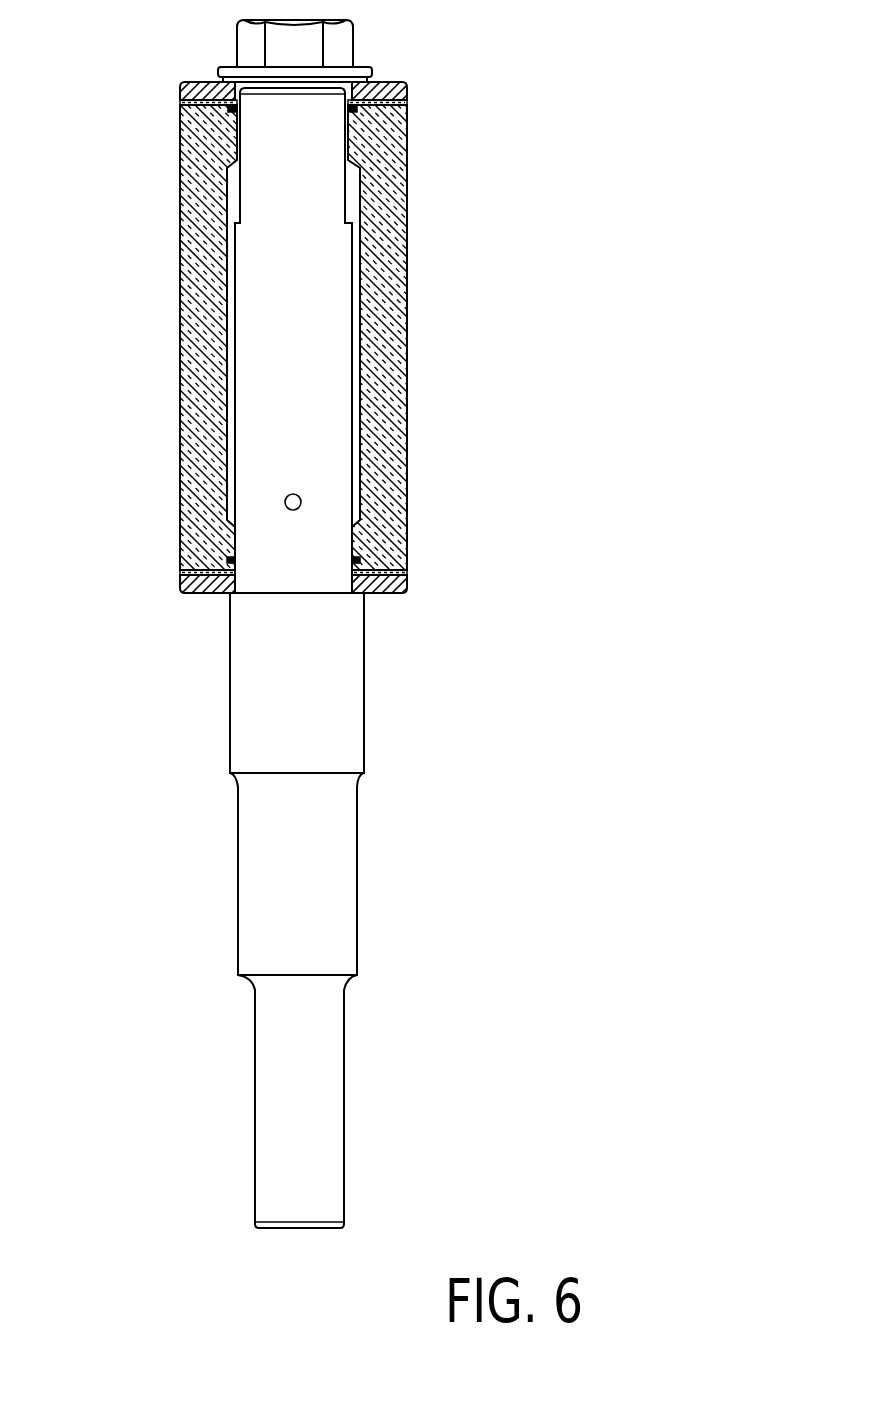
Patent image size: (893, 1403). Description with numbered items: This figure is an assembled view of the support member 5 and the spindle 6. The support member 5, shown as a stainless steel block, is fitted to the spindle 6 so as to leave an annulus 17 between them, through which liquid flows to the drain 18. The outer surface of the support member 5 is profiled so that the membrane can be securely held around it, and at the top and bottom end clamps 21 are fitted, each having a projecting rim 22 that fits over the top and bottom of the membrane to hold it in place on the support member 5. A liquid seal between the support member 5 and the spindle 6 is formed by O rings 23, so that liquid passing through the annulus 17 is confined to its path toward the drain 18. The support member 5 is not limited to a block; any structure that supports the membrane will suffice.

The support member 5 is at (405, 312).
The spindle 6 is at (322, 683).
The annulus 17 is at (403, 198).
The drain 18 is at (293, 494).
The end clamps 21 is at (405, 83).
The projecting rim 22 is at (403, 104).
The O rings 23 is at (230, 106).